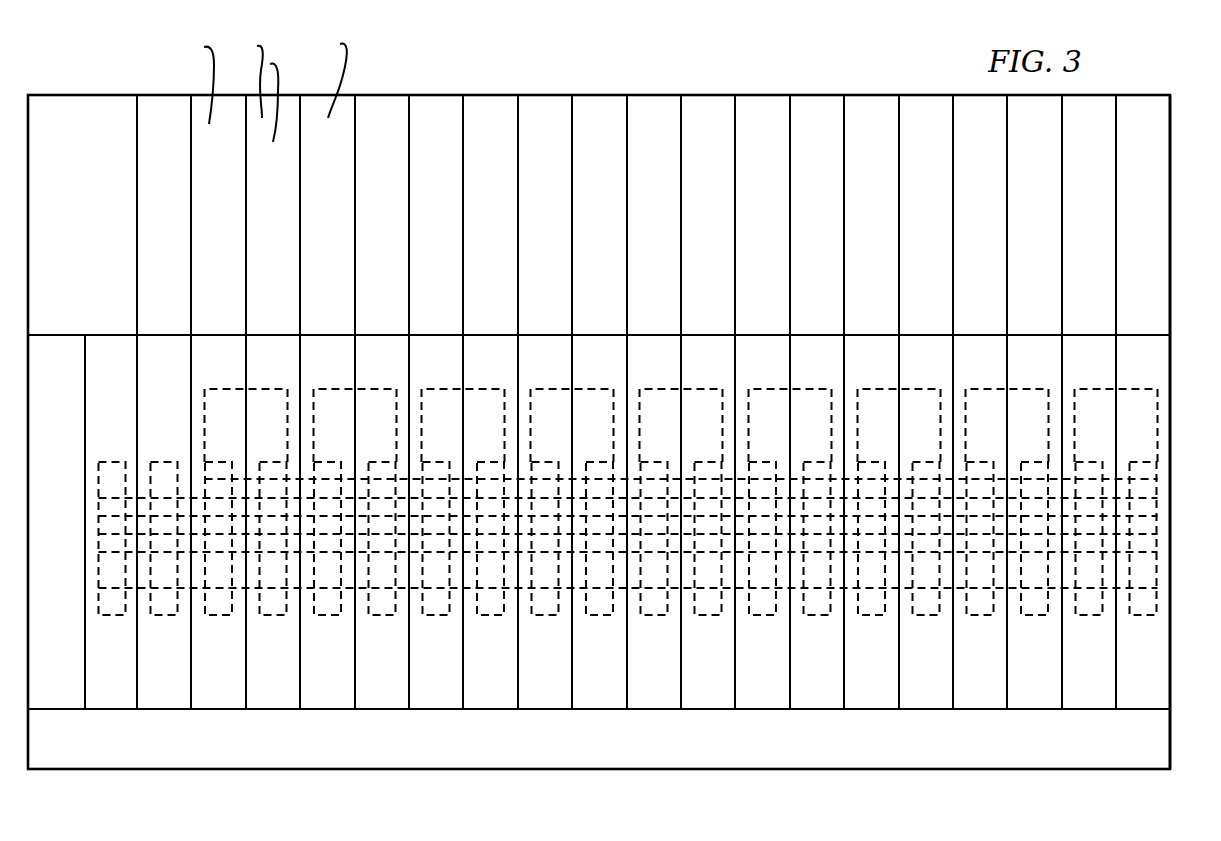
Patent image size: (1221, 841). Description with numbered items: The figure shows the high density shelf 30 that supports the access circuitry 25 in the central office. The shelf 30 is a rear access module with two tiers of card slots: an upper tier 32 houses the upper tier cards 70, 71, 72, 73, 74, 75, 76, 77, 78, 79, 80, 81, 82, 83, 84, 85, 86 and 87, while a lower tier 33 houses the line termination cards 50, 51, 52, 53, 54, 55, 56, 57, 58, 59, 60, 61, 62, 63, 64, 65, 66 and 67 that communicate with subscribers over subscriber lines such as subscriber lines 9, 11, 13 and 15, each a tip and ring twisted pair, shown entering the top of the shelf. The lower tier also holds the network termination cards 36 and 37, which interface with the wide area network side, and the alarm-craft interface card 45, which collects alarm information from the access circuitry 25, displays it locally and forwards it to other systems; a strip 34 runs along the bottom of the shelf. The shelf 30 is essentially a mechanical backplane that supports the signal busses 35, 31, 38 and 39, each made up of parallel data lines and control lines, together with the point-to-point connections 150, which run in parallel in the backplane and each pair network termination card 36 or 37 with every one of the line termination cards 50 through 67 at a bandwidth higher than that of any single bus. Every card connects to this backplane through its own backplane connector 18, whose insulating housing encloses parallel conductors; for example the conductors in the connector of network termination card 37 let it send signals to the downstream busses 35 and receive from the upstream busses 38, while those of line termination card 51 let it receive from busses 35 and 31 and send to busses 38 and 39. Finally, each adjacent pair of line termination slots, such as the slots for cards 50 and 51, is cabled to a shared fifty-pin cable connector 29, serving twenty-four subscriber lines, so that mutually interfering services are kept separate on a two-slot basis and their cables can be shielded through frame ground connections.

The subscriber line 9 is at (209, 80).
The subscriber line 11 is at (259, 74).
The subscriber line 13 is at (278, 82).
The subscriber line 15 is at (342, 70).
The backplane connector 18 is at (113, 616).
The access circuitry 25 is at (69, 227).
The cable connector 29 is at (232, 389).
The high density shelf 30 is at (289, 772).
The signal bus 31 is at (123, 517).
The upper tier 32 is at (1170, 157).
The lower tier 33 is at (1172, 660).
The bottom strip 34 is at (590, 752).
The signal bus 35 is at (120, 498).
The network termination card 36 is at (98, 700).
The network termination card 37 is at (151, 700).
The signal bus 38 is at (122, 537).
The signal bus 39 is at (122, 554).
The alarm-craft interface card 45 is at (43, 700).
The line termination card 50 is at (205, 700).
The line termination card 51 is at (260, 700).
The line termination card 52 is at (314, 700).
The line termination card 53 is at (369, 700).
The line termination card 54 is at (423, 700).
The line termination card 55 is at (477, 700).
The line termination card 56 is at (532, 700).
The line termination card 57 is at (586, 700).
The line termination card 58 is at (641, 700).
The line termination card 59 is at (695, 700).
The line termination card 60 is at (749, 700).
The line termination card 61 is at (804, 700).
The line termination card 62 is at (858, 700).
The line termination card 63 is at (913, 700).
The line termination card 64 is at (967, 700).
The line termination card 65 is at (1021, 700).
The line termination card 66 is at (1076, 700).
The line termination card 67 is at (1130, 700).
The upper tier card 70 is at (205, 227).
The upper tier card 71 is at (260, 227).
The upper tier card 72 is at (314, 227).
The upper tier card 73 is at (369, 227).
The upper tier card 74 is at (423, 227).
The upper tier card 75 is at (477, 227).
The upper tier card 76 is at (532, 227).
The upper tier card 77 is at (586, 227).
The upper tier card 78 is at (641, 227).
The upper tier card 79 is at (695, 227).
The upper tier card 80 is at (749, 227).
The upper tier card 81 is at (804, 227).
The upper tier card 82 is at (858, 227).
The upper tier card 83 is at (913, 227).
The upper tier card 84 is at (967, 227).
The upper tier card 85 is at (1021, 227).
The upper tier card 86 is at (1076, 227).
The upper tier card 87 is at (1130, 227).
The point-to-point connections 150 is at (123, 590).